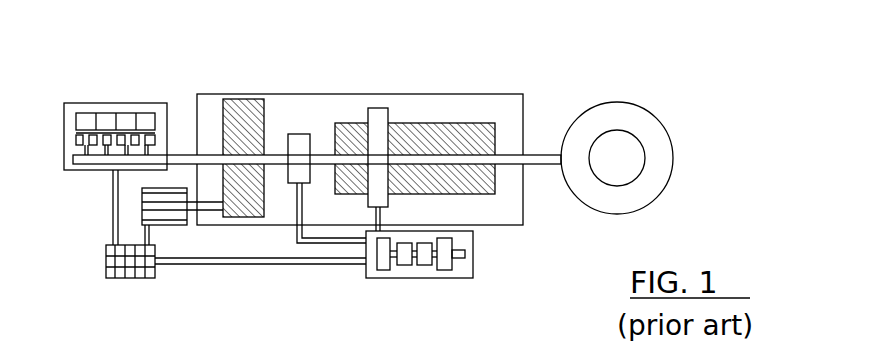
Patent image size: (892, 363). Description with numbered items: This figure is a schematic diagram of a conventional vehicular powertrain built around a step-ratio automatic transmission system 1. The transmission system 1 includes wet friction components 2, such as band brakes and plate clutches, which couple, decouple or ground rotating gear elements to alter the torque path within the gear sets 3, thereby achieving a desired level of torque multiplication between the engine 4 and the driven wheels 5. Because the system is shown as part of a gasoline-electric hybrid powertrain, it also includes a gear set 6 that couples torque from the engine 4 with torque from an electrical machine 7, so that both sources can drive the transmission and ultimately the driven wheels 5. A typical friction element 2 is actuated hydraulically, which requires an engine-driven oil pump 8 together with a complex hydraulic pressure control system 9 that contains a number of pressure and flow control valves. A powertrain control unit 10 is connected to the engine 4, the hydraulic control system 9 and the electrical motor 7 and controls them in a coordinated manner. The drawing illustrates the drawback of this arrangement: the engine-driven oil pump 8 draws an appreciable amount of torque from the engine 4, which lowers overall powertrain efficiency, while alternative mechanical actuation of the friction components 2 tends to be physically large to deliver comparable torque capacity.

The step-ratio automatic transmission system 1 is at (368, 94).
The wet friction components 2 is at (390, 112).
The gear sets 3 is at (466, 123).
The engine 4 is at (82, 103).
The driven wheels 5 is at (634, 104).
The gear set 6 is at (223, 110).
The electrical machine 7 is at (142, 203).
The engine-driven oil pump 8 is at (300, 134).
The hydraulic pressure control system 9 is at (428, 278).
The powertrain control unit 10 is at (116, 278).